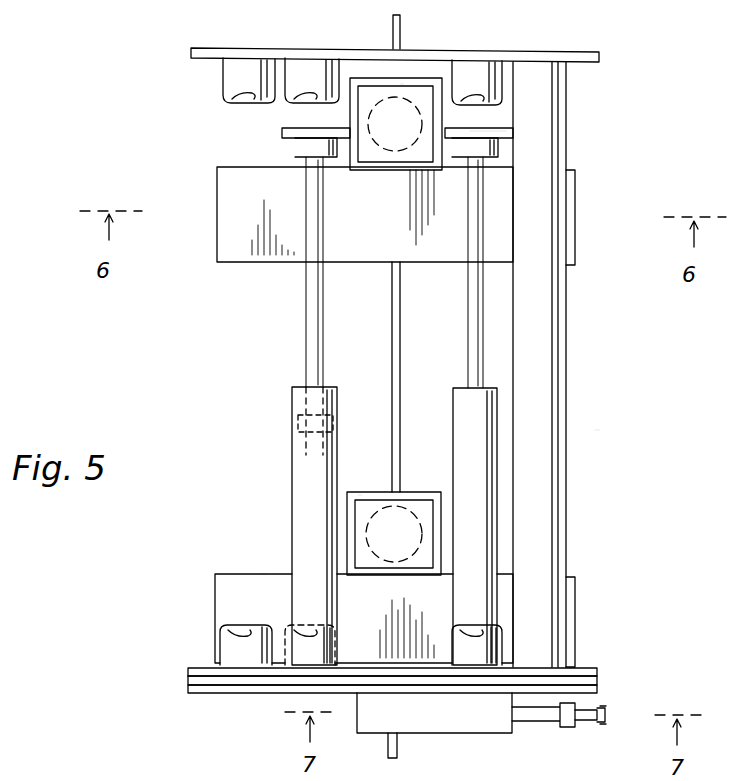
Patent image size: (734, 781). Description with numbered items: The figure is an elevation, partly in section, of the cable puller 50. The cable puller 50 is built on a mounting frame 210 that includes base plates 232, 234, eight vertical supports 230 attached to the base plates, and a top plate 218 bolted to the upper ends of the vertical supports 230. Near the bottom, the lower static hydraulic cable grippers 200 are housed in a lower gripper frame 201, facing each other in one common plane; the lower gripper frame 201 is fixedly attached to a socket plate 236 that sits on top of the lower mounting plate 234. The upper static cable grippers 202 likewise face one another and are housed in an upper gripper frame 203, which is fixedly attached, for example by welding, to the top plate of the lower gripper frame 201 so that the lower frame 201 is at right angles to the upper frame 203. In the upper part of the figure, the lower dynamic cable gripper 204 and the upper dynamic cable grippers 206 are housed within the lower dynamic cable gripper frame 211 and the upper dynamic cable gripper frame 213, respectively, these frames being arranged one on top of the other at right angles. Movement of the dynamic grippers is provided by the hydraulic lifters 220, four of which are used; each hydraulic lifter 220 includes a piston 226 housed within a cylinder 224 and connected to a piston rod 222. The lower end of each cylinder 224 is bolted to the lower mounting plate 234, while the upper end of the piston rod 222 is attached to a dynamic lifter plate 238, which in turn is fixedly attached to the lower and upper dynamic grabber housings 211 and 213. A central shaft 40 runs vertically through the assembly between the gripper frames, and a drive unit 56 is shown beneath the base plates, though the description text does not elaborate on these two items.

The drive shaft 40 is at (400, 323).
The cable puller 50 is at (608, 434).
The drive motor 56 is at (491, 741).
The lower static hydraulic cable gripper 200 is at (228, 594).
The lower gripper frame 201 is at (262, 575).
The upper static hydraulic cable gripper 202 is at (418, 492).
The upper gripper frame 203 is at (360, 492).
The lower dynamic hydraulic cable gripper 204 is at (218, 177).
The upper dynamic hydraulic cable gripper 206 is at (368, 92).
The mounting frame 210 is at (616, 60).
The lower dynamic cable gripper frame 211 is at (235, 262).
The upper dynamic cable gripper frame 213 is at (406, 85).
The top plate 218 is at (442, 58).
The hydraulic lifter 220 is at (490, 360).
The piston rod 222 is at (305, 345).
The cylinder 224 is at (292, 458).
The piston 226 is at (298, 424).
The vertical support 230 is at (555, 124).
The base plate 232 is at (597, 690).
The lower mounting plate 234 is at (597, 678).
The socket plate 236 is at (577, 668).
The dynamic lifter plate 238 is at (500, 134).